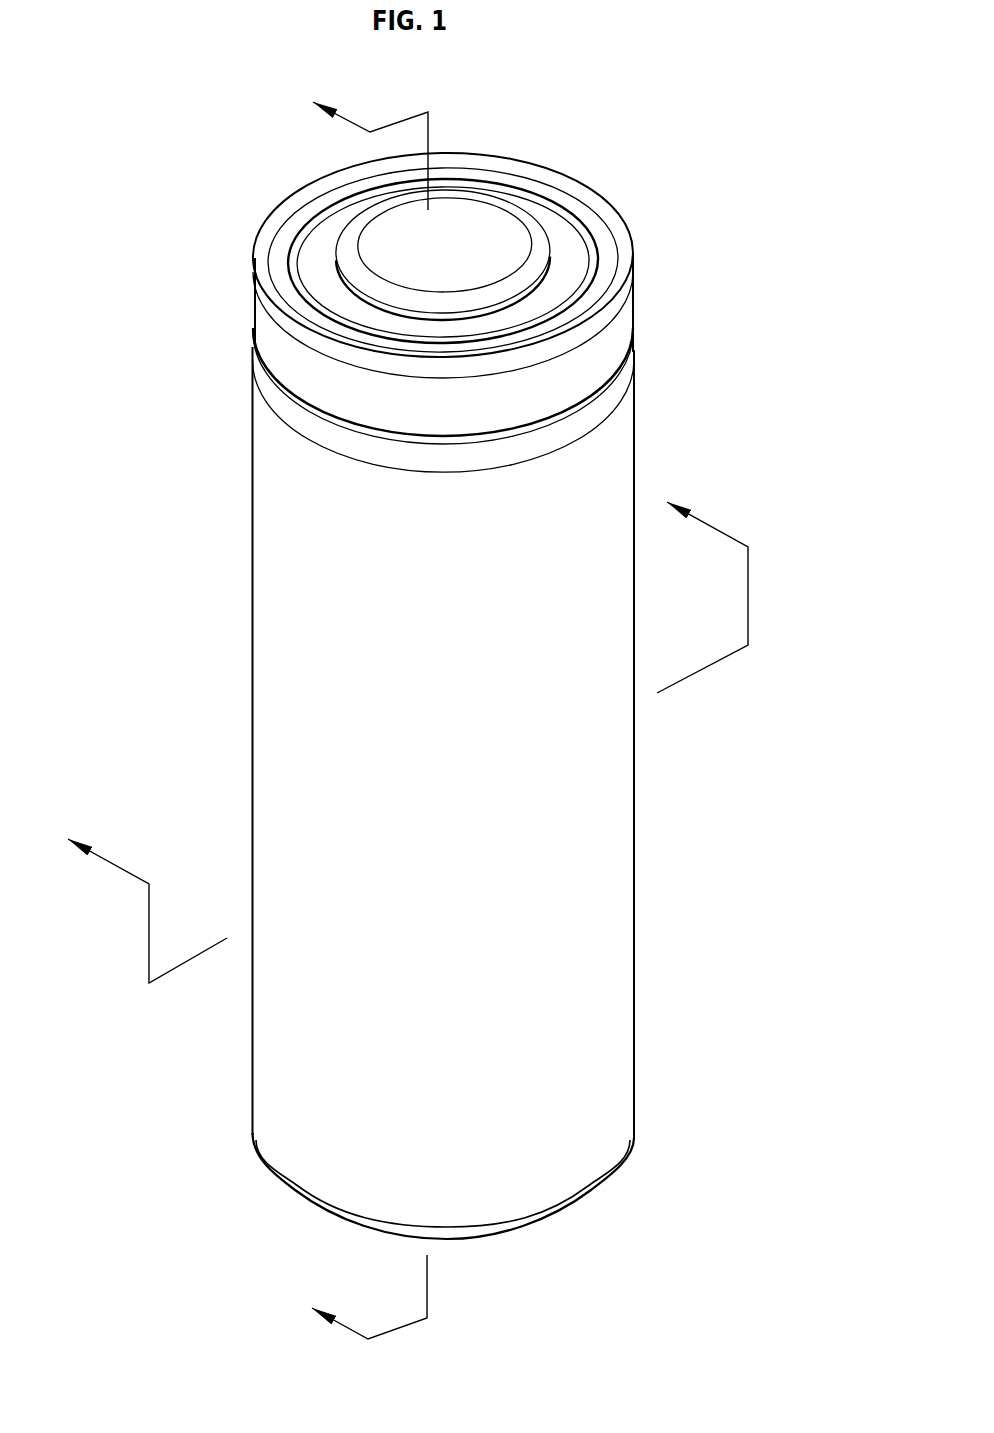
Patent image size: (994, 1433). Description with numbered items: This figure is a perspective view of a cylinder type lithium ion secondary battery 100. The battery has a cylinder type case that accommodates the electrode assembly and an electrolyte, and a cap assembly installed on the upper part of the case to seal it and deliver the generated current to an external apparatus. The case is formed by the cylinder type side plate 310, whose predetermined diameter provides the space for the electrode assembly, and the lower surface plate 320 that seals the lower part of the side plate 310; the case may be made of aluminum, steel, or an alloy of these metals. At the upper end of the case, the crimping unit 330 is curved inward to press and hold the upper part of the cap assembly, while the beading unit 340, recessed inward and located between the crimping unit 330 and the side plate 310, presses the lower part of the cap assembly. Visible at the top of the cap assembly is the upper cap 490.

The cylinder type lithium ion secondary battery 100 is at (452, 707).
The cylinder type side plate 310 is at (587, 852).
The lower surface plate 320 is at (572, 1205).
The crimping unit 330 is at (608, 242).
The beading unit 340 is at (590, 415).
The upper cap 490 is at (470, 218).